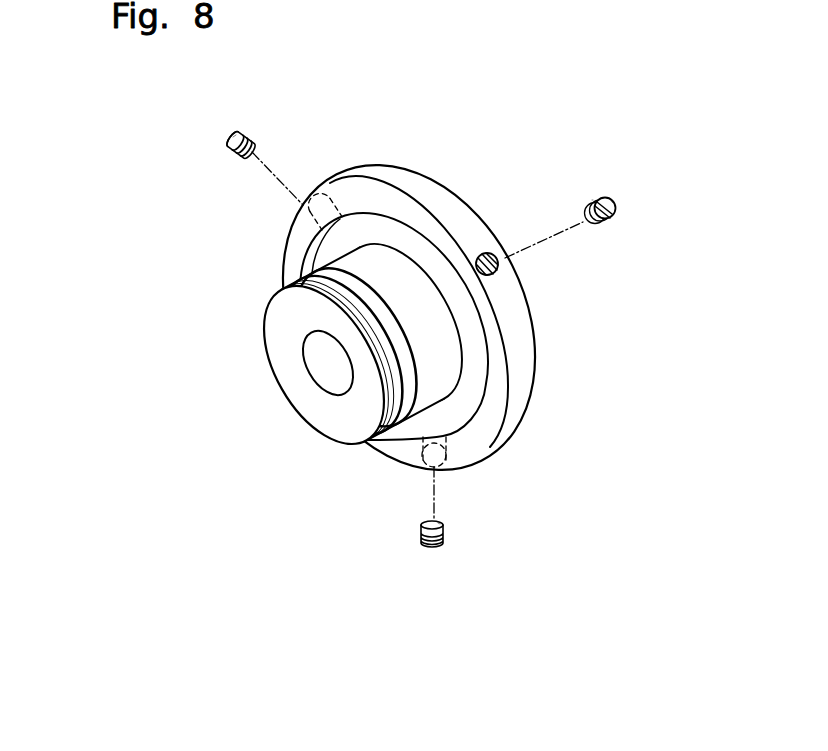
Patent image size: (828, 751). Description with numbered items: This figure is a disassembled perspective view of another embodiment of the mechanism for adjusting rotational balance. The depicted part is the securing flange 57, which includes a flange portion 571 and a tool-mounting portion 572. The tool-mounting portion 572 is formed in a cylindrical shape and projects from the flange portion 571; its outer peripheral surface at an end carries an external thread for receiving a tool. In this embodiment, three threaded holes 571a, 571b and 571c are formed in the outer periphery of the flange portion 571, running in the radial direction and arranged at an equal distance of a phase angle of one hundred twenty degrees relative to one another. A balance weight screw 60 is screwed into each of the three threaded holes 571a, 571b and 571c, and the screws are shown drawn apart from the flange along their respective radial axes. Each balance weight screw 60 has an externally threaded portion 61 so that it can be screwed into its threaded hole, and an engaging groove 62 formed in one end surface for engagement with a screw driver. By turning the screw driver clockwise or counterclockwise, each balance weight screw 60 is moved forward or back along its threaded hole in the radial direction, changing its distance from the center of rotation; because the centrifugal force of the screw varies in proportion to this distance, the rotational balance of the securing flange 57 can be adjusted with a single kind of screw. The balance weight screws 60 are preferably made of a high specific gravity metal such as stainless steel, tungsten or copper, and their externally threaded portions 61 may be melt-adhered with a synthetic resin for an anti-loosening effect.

The securing flange 57 is at (397, 145).
The flange portion 571 is at (430, 193).
The threaded hole 571a is at (333, 183).
The threaded hole 571b is at (498, 269).
The threaded hole 571c is at (447, 447).
The tool-mounting portion 572 is at (265, 299).
The balance weight screw 60 is at (229, 145).
The externally threaded portion 61 is at (250, 136).
The engaging groove 62 is at (616, 213).